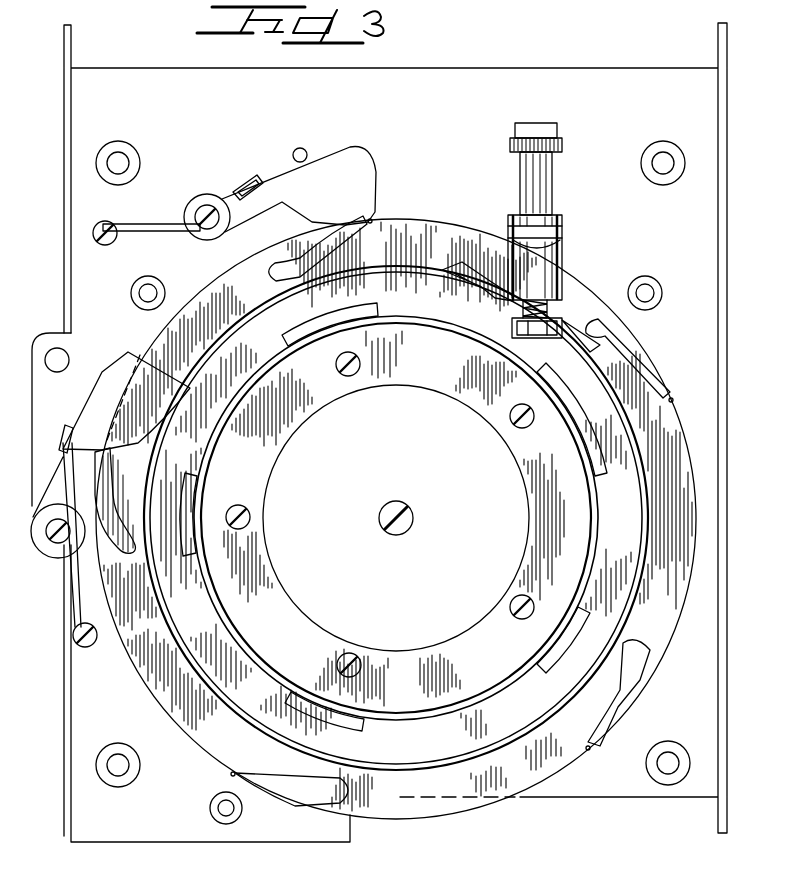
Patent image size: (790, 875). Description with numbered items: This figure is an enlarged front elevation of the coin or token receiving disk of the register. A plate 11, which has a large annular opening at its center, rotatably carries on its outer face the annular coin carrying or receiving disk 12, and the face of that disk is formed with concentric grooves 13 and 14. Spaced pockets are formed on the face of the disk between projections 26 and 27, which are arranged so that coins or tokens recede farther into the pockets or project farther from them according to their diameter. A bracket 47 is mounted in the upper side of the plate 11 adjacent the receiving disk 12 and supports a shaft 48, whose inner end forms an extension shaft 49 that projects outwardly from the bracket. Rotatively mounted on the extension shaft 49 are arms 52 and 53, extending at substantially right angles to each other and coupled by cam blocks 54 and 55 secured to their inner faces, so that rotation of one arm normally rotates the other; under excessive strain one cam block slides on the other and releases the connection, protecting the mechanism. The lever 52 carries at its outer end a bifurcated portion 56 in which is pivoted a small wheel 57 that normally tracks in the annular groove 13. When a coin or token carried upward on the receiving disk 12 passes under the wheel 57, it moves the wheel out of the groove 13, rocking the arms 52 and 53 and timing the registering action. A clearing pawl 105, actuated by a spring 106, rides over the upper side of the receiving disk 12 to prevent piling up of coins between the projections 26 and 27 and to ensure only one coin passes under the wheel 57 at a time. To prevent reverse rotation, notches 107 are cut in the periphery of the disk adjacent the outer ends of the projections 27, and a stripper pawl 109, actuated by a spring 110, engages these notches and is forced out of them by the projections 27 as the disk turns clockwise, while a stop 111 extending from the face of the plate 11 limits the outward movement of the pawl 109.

The plate 11 is at (644, 76).
The coin carrying or receiving disk 12 is at (396, 519).
The concentric groove 13 is at (643, 466).
The concentric groove 14 is at (594, 503).
The projection 26 is at (338, 314).
The projection 27 is at (306, 248).
The bracket 47 is at (560, 144).
The shaft 48 is at (543, 178).
The extension shaft 49 is at (572, 300).
The arm 52 is at (548, 318).
The arm 53 is at (562, 218).
The cam block 54 is at (552, 273).
The cam block 55 is at (510, 238).
The bifurcated portion 56 is at (490, 290).
The small wheel 57 is at (463, 282).
The clearing pawl 105 is at (126, 401).
The spring 106 is at (72, 595).
The notch 107 is at (372, 222).
The stripper pawl 109 is at (358, 169).
The spring 110 is at (155, 222).
The stop 111 is at (302, 148).